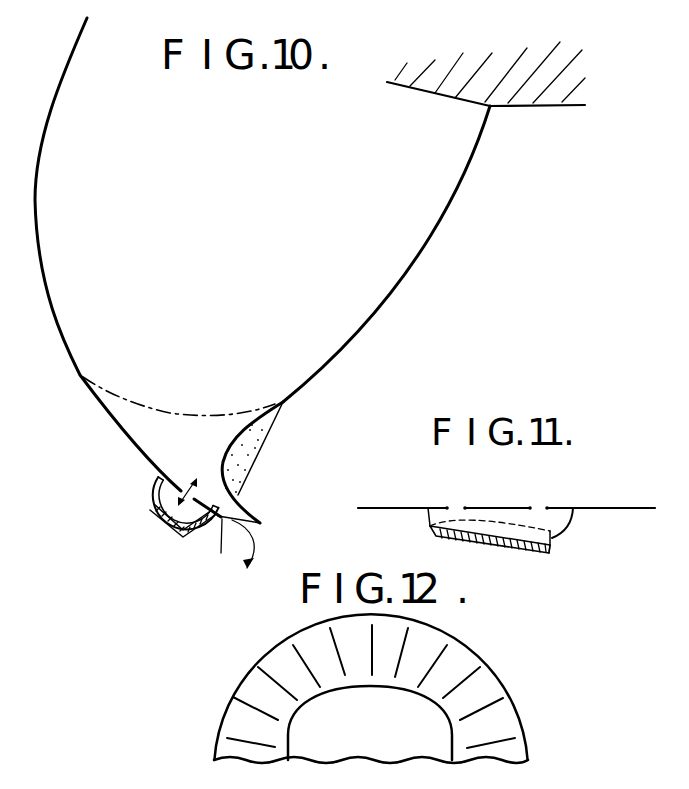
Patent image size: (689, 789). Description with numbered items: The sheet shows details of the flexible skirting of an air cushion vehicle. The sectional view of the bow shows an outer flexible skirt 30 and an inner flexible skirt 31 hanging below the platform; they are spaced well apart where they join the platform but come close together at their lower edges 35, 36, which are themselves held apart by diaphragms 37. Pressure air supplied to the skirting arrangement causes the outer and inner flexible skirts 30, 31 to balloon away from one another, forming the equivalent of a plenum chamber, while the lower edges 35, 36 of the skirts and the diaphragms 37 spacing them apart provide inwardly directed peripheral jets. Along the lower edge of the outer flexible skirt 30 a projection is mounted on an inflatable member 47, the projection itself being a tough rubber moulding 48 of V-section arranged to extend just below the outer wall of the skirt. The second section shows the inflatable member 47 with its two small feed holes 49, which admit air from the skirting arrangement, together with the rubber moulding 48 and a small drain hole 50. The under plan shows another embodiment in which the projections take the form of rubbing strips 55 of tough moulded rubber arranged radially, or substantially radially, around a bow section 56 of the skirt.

In FIG. 10, the outer flexible skirt 30 is at (58, 322).
In FIG. 10, the inner flexible skirt 31 is at (365, 327).
In FIG. 10, the lower edge of outer skirt 35 is at (219, 551).
In FIG. 10, the lower edge of inner skirt 36 is at (262, 519).
In FIG. 10, the diaphragm 37 is at (212, 427).
In FIG. 10, the inflatable member 47 is at (158, 488).
In FIG. 11, the inflatable member 47 is at (573, 520).
In FIG. 10, the rubber moulding 48 is at (178, 536).
In FIG. 11, the rubber moulding 48 is at (522, 553).
In FIG. 11, the feed hole 49 is at (455, 508).
In FIG. 11, the drain hole 50 is at (553, 543).
In FIG. 12, the rubbing strip 55 is at (257, 706).
In FIG. 12, the bow section 56 is at (423, 637).